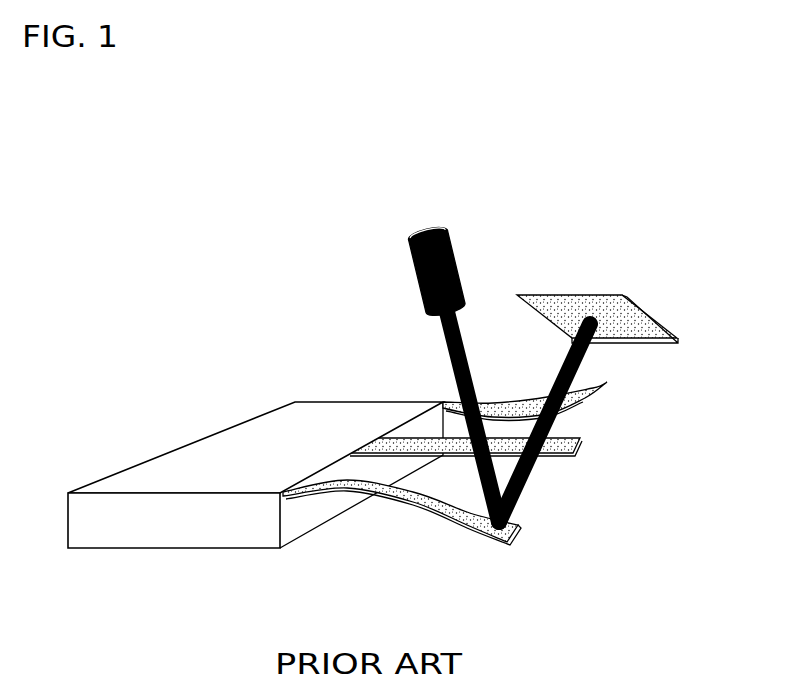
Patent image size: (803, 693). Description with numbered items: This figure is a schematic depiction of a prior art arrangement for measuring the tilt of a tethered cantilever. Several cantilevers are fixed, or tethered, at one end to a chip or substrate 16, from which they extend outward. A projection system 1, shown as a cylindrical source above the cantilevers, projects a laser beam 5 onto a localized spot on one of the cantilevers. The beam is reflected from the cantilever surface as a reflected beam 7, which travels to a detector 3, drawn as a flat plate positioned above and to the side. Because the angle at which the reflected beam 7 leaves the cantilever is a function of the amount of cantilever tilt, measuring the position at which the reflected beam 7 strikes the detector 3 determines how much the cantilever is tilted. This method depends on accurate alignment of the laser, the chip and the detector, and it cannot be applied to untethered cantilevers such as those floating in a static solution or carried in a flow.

The projection system 1 is at (442, 264).
The detector 3 is at (648, 317).
The laser beam 5 is at (455, 360).
The reflected beam 7 is at (537, 460).
The chip 16 is at (349, 454).